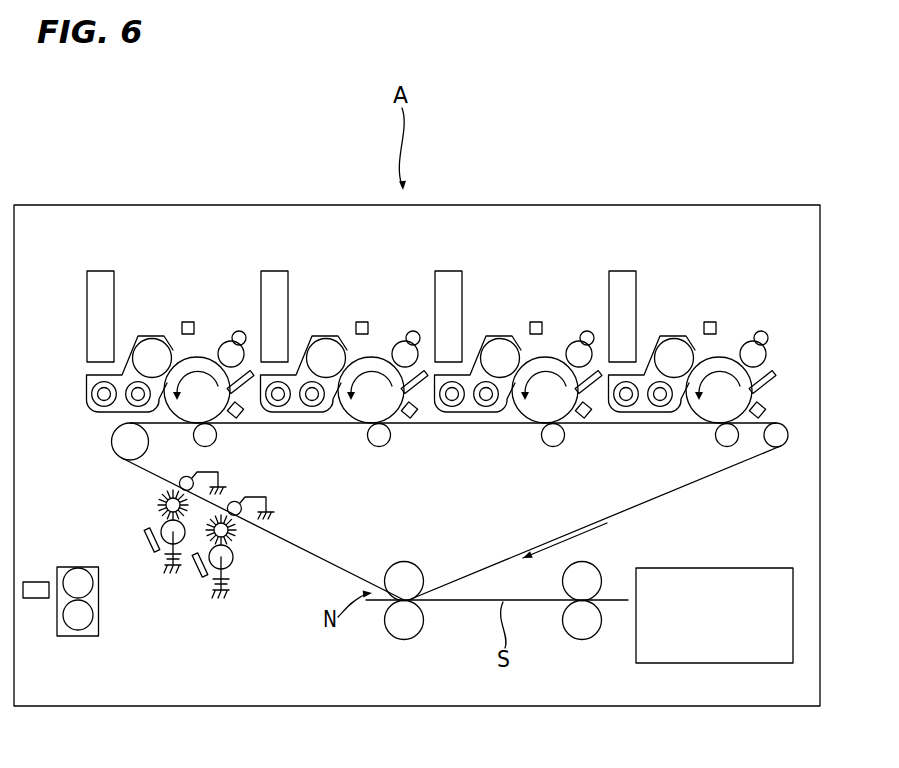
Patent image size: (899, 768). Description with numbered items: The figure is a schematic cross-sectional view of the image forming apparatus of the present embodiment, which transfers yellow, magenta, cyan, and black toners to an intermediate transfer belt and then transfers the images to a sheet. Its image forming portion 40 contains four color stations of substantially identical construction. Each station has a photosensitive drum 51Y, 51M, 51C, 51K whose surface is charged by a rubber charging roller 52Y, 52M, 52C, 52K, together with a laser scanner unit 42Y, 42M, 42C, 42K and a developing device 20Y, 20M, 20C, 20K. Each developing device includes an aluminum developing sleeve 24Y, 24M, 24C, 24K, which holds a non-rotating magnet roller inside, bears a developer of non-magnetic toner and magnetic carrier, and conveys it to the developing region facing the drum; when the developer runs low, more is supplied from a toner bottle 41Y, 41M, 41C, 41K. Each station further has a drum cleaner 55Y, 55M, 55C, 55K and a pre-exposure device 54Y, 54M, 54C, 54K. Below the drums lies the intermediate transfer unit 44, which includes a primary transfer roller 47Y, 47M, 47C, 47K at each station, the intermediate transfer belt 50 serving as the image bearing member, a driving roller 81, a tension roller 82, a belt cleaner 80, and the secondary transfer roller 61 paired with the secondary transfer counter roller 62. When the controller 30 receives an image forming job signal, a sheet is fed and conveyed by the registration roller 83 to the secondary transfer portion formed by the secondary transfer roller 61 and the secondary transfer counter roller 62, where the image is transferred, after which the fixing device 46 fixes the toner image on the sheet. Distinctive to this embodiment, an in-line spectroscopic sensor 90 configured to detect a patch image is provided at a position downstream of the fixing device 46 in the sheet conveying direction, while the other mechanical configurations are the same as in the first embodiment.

The image forming portion 40 is at (66, 229).
The toner bottle 41Y is at (103, 271).
The toner bottle 41M is at (276, 271).
The toner bottle 41C is at (448, 271).
The toner bottle 41K is at (620, 271).
The laser scanner unit 42Y is at (187, 321).
The laser scanner unit 42M is at (360, 321).
The laser scanner unit 42C is at (531, 322).
The laser scanner unit 42K is at (704, 322).
The developing device 20Y is at (86, 375).
The developing device 20M is at (262, 375).
The developing device 20C is at (434, 375).
The developing device 20K is at (609, 375).
The developing sleeve 24Y is at (152, 348).
The developing sleeve 24M is at (326, 348).
The developing sleeve 24C is at (500, 348).
The developing sleeve 24K is at (674, 348).
The photosensitive drum 51Y is at (197, 390).
The photosensitive drum 51M is at (371, 390).
The photosensitive drum 51C is at (545, 390).
The photosensitive drum 51K is at (719, 390).
The charging roller 52Y is at (229, 344).
The charging roller 52M is at (403, 344).
The charging roller 52C is at (568, 348).
The charging roller 52K is at (755, 343).
The drum cleaner 55Y is at (253, 388).
The drum cleaner 55M is at (427, 392).
The drum cleaner 55C is at (601, 392).
The drum cleaner 55K is at (777, 372).
The pre-exposure device 54Y is at (237, 418).
The pre-exposure device 54M is at (411, 418).
The pre-exposure device 54C is at (586, 418).
The pre-exposure device 54K is at (762, 409).
The primary transfer roller 47Y is at (200, 446).
The primary transfer roller 47M is at (382, 447).
The primary transfer roller 47C is at (553, 446).
The primary transfer roller 47K is at (727, 447).
The intermediate transfer belt 50 is at (638, 505).
The driving roller 81 is at (113, 433).
The tension roller 82 is at (781, 447).
The secondary transfer counter roller 62 is at (412, 572).
The secondary transfer roller 61 is at (398, 632).
The registration roller 83 is at (590, 635).
The belt cleaner 80 is at (159, 505).
The intermediate transfer unit 44 is at (296, 590).
The fixing device 46 is at (63, 637).
The in-line spectroscopic sensor 90 is at (38, 598).
The controller 30 is at (715, 664).